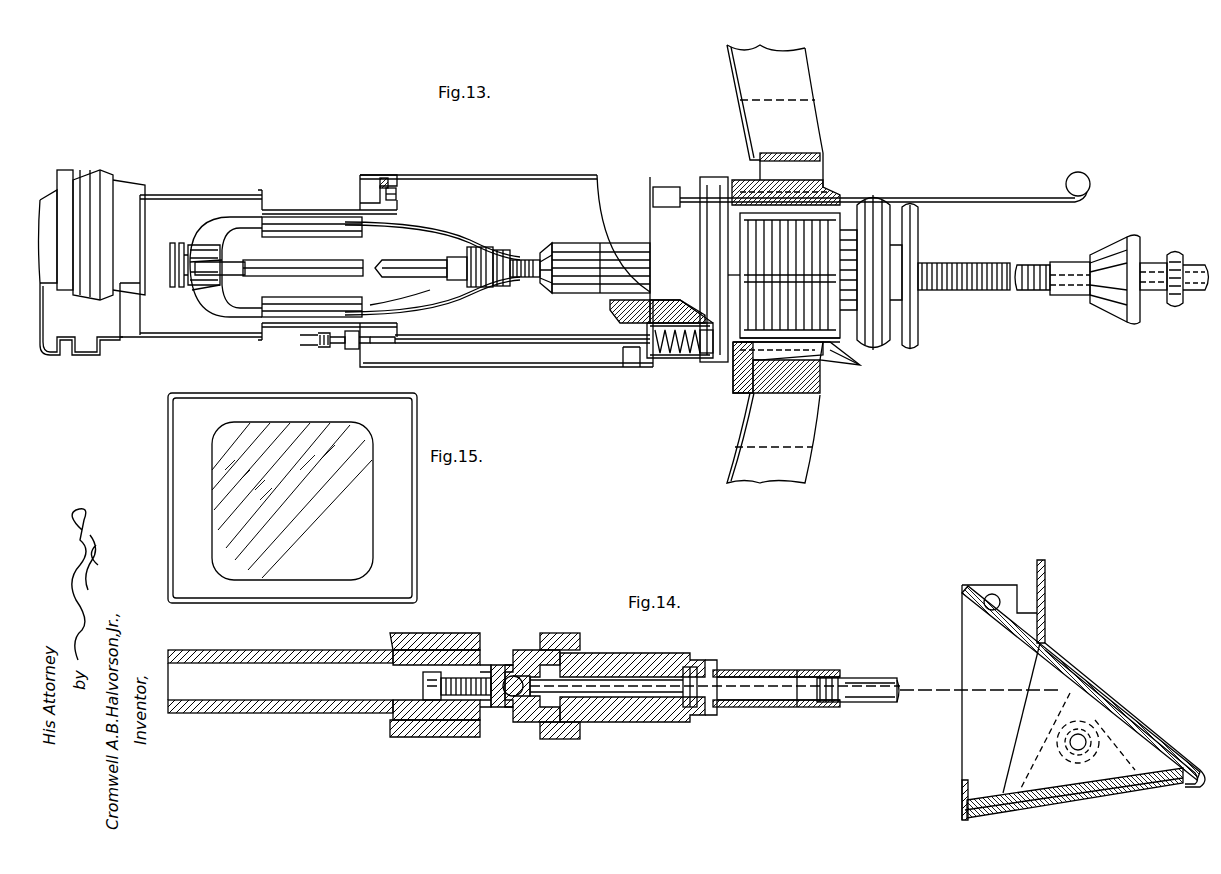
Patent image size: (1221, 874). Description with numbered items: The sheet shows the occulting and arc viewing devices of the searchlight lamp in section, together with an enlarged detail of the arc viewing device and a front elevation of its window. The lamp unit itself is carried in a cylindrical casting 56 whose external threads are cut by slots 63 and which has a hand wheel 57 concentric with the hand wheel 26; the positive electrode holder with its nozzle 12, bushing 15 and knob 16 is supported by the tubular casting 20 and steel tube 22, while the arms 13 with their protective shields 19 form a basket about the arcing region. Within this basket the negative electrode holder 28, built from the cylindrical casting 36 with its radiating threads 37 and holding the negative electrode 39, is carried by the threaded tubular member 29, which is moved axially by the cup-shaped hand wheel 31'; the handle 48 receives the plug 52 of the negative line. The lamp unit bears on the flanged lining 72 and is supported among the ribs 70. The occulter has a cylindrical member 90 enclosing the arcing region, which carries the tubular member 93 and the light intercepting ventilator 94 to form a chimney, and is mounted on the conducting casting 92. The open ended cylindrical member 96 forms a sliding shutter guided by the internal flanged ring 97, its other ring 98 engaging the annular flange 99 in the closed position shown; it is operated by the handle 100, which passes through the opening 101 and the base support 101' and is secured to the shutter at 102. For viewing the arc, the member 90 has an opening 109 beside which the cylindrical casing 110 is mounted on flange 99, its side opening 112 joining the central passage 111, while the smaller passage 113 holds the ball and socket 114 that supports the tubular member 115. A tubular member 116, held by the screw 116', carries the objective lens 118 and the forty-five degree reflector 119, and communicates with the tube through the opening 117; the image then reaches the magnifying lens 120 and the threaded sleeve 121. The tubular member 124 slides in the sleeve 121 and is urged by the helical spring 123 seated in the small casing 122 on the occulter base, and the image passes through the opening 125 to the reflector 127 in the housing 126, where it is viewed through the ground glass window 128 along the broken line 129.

In FIG. 13, the tubular member 93 is at (214, 192).
In FIG. 13, the light intercepting ventilator 94 is at (92, 262).
In FIG. 13, the cylindrical member 90 is at (292, 210).
In FIG. 13, the protective shields 19 is at (330, 217).
In FIG. 13, the internal flanged ring 98 is at (362, 190).
In FIG. 13, the annular flange 99 is at (398, 194).
In FIG. 13, the open ended cylindrical member 96 is at (544, 175).
In FIG. 13, the arms 13 is at (425, 222).
In FIG. 13, the threads 37 is at (478, 247).
In FIG. 13, the cylindrical casting 36 is at (500, 250).
In FIG. 13, the negative electrode 39 is at (412, 260).
In FIG. 13, the sleeve or bushing 15 is at (170, 265).
In FIG. 13, the knob 16 is at (172, 289).
In FIG. 13, the nozzle 12 is at (212, 298).
In FIG. 13, the opening 109 is at (400, 293).
In FIG. 13, the negative electrode holder 28 is at (487, 280).
In FIG. 13, the tubular casting 20 is at (548, 293).
In FIG. 13, the steel tube 22 is at (590, 293).
In FIG. 13, the securing point 102 is at (672, 187).
In FIG. 13, the base support 101' is at (717, 254).
In FIG. 13, the opening 101 is at (797, 176).
In FIG. 13, the ribs 70 is at (775, 264).
In FIG. 13, the cylindrical casting 56 is at (805, 213).
In FIG. 13, the hand wheel 57 is at (885, 205).
In FIG. 13, the hand wheel 26 is at (918, 240).
In FIG. 13, the handle 100 is at (993, 188).
In FIG. 13, the slots 63 is at (748, 290).
In FIG. 13, the tubular member 29 is at (968, 290).
In FIG. 13, the cup-shaped hand wheel 31' is at (1108, 276).
In FIG. 13, the handle 48 is at (1172, 303).
In FIG. 13, the plug 52 is at (1197, 290).
In FIG. 13, the cylindrical casing 110 is at (355, 349).
In FIG. 14, the cylindrical casing 110 is at (568, 633).
In FIG. 13, the tubular member 124 is at (540, 343).
In FIG. 14, the tubular member 124 is at (858, 702).
In FIG. 13, the cylindrical casting 92 is at (620, 323).
In FIG. 13, the internal flanged ring 97 is at (625, 355).
In FIG. 13, the small casing 122 is at (675, 358).
In FIG. 13, the helical spring 123 is at (707, 330).
In FIG. 13, the opening 125 is at (778, 353).
In FIG. 13, the flanged lining 72 is at (838, 375).
In FIG. 13, the housing 126 is at (855, 368).
In FIG. 14, the housing 126 is at (1108, 672).
In FIG. 15, the window 128 is at (292, 498).
In FIG. 14, the window 128 is at (1085, 792).
In FIG. 14, the tubular member 115 is at (258, 650).
In FIG. 14, the ball and socket 114 is at (448, 640).
In FIG. 14, the central passage 113 is at (392, 720).
In FIG. 14, the screw 116' is at (434, 686).
In FIG. 14, the objective lens 118 is at (500, 675).
In FIG. 14, the reflector 119 is at (495, 707).
In FIG. 14, the tubular member 116 is at (524, 722).
In FIG. 14, the opening 112 is at (520, 660).
In FIG. 14, the central passage 111 is at (580, 653).
In FIG. 14, the opening 117 is at (547, 686).
In FIG. 14, the magnifying lens 120 is at (690, 707).
In FIG. 14, the threaded sleeve 121 is at (760, 707).
In FIG. 14, the broken line 129 is at (931, 684).
In FIG. 14, the reflector 127 is at (1015, 647).